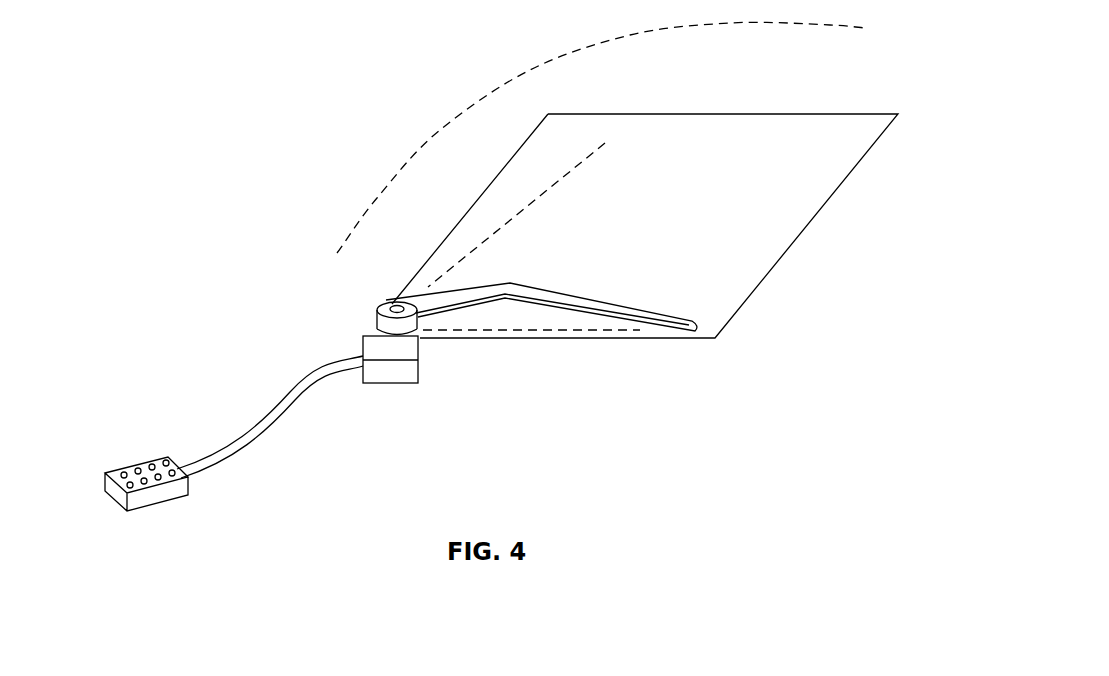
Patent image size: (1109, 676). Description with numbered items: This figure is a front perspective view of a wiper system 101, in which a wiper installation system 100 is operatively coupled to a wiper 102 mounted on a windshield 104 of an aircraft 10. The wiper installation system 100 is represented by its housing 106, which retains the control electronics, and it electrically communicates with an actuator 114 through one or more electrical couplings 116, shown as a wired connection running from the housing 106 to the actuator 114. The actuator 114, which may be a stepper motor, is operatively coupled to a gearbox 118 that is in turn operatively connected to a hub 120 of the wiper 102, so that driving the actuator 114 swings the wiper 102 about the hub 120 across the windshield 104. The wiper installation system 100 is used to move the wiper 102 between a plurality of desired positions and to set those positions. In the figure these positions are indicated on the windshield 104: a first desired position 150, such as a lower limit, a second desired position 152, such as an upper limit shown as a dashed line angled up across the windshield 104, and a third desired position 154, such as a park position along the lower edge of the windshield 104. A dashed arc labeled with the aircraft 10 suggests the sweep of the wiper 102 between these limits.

The aircraft 10 is at (833, 50).
The wiper system 101 is at (174, 113).
The wiper installation system 100 is at (130, 443).
The windshield 104 is at (878, 145).
The second desired position 152 is at (575, 170).
The third desired position 154 is at (593, 337).
The wiper 102 is at (540, 290).
The first desired position 150 is at (698, 324).
The hub 120 is at (383, 305).
The actuator 114 is at (390, 385).
The gearbox 118 is at (420, 353).
The electrical couplings 116 is at (275, 425).
The housing 106 is at (178, 493).